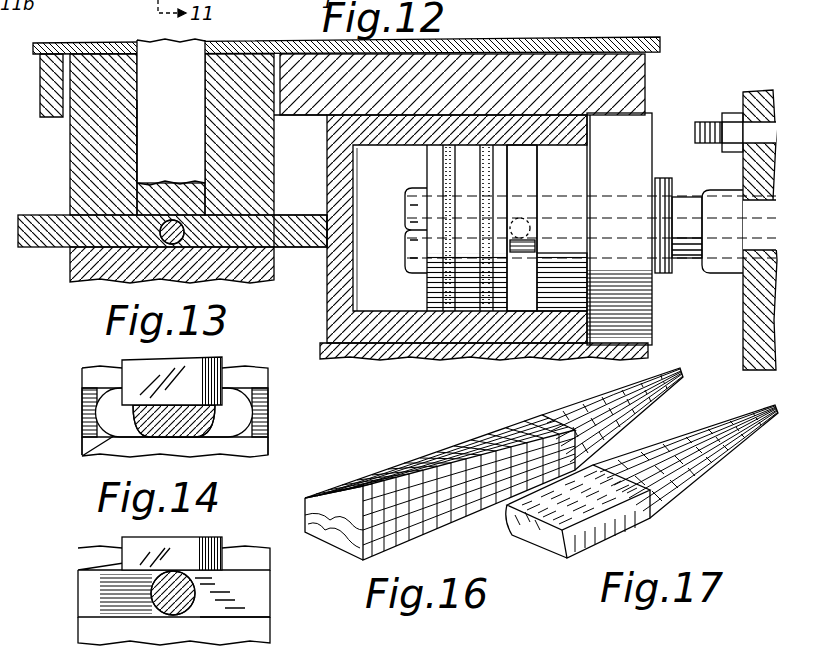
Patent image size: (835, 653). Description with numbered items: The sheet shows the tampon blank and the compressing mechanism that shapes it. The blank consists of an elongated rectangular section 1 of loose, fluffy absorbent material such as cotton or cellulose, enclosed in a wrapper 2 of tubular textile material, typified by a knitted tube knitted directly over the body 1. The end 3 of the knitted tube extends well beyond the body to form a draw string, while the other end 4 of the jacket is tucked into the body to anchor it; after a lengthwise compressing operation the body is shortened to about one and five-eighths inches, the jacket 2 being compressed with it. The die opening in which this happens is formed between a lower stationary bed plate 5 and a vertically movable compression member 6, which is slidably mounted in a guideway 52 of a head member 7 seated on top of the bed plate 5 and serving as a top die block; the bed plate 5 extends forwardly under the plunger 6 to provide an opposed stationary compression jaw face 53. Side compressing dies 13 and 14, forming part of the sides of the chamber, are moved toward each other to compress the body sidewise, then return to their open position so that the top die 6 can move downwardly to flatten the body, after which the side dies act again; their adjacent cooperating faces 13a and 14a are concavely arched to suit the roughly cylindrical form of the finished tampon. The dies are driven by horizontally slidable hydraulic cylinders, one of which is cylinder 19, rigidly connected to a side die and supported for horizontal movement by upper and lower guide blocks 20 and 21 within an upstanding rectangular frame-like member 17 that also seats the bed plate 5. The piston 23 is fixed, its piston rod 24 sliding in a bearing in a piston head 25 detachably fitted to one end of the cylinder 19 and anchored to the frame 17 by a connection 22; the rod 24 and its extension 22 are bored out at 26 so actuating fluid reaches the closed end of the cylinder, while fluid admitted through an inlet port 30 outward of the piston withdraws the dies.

In FIG. 16, the absorbent body 1 is at (402, 466).
In FIG. 17, the absorbent body 1 is at (644, 522).
In FIG. 16, the wrapper 2 is at (372, 486).
In FIG. 16, the end of knitted tube 3 is at (608, 400).
In FIG. 17, the end of knitted tube 3 is at (700, 456).
In FIG. 16, the other end of jacket 4 is at (343, 540).
In FIG. 12, the bed plate 5 is at (268, 262).
In FIG. 13, the bed plate 5 is at (262, 442).
In FIG. 14, the bed plate 5 is at (258, 625).
In FIG. 12, the compression member 6 is at (171, 127).
In FIG. 13, the compression member 6 is at (216, 361).
In FIG. 14, the compression member 6 is at (220, 541).
In FIG. 12, the head member 7 is at (76, 134).
In FIG. 13, the head member 7 is at (265, 378).
In FIG. 14, the head member 7 is at (265, 556).
In FIG. 12, the side compressing die 13 is at (58, 224).
In FIG. 13, the side compressing die 13 is at (86, 425).
In FIG. 14, the side compressing die 13 is at (86, 597).
In FIG. 13, the cooperating face 13a is at (96, 410).
In FIG. 12, the side compressing die 14 is at (283, 226).
In FIG. 13, the side compressing die 14 is at (268, 398).
In FIG. 14, the side compressing die 14 is at (262, 595).
In FIG. 13, the cooperating face 14a is at (269, 416).
In FIG. 12, the frame-like member 17 is at (600, 44).
In FIG. 12, the hydraulic cylinder 19 is at (328, 163).
In FIG. 12, the upper guide block 20 is at (507, 60).
In FIG. 12, the lower guide block 21 is at (463, 352).
In FIG. 12, the anchoring connection 22 is at (706, 258).
In FIG. 12, the piston 23 is at (426, 169).
In FIG. 12, the piston rod 24 is at (519, 198).
In FIG. 12, the piston head 25 is at (640, 146).
In FIG. 12, the bore 26 is at (687, 197).
In FIG. 12, the inlet port 30 is at (524, 252).
In FIG. 12, the guideway 52 is at (138, 143).
In FIG. 12, the stationary compression jaw face 53 is at (182, 245).
In FIG. 13, the stationary compression jaw face 53 is at (200, 440).
In FIG. 14, the stationary compression jaw face 53 is at (173, 593).